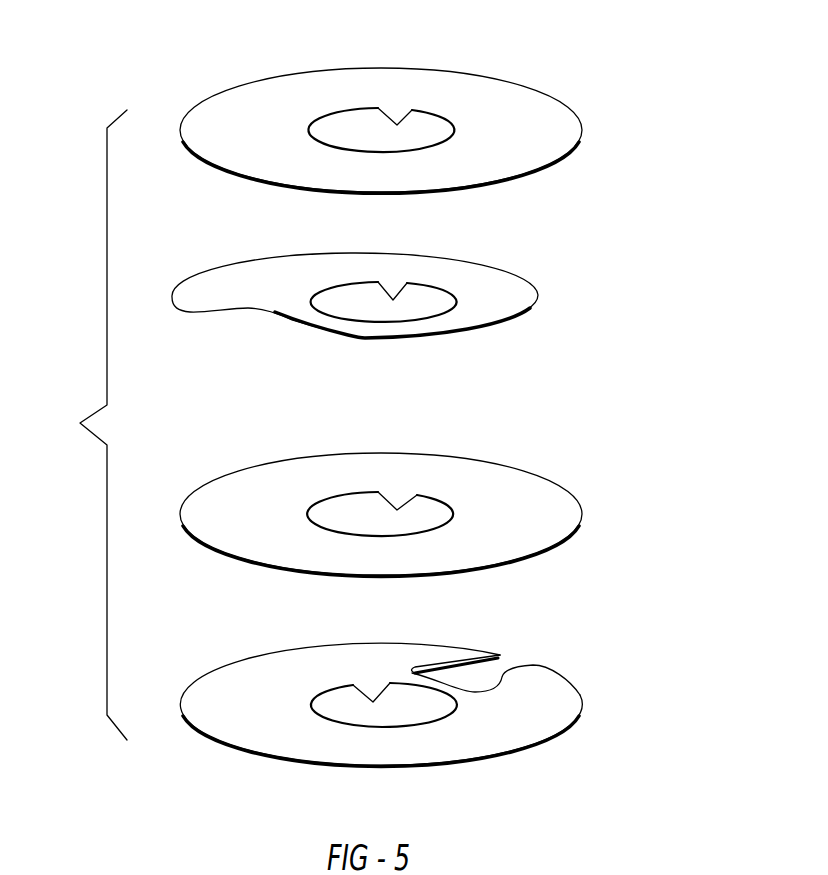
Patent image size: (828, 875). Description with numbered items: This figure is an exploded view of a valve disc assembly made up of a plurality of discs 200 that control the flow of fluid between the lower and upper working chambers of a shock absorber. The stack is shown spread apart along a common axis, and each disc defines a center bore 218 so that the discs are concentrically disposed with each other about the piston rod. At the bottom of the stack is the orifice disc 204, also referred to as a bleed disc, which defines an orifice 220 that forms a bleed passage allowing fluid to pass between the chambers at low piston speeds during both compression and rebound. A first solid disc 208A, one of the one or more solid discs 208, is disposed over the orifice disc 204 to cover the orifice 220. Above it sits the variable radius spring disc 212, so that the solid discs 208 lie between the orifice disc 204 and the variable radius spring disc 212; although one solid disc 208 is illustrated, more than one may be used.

The plurality of discs 200 is at (83, 425).
The orifice disc 204 is at (557, 702).
The solid disc 208 is at (558, 122).
The first solid disc 208A is at (558, 508).
The variable radius spring disc 212 is at (517, 292).
The center bore 218 is at (412, 110).
The orifice 220 is at (500, 667).